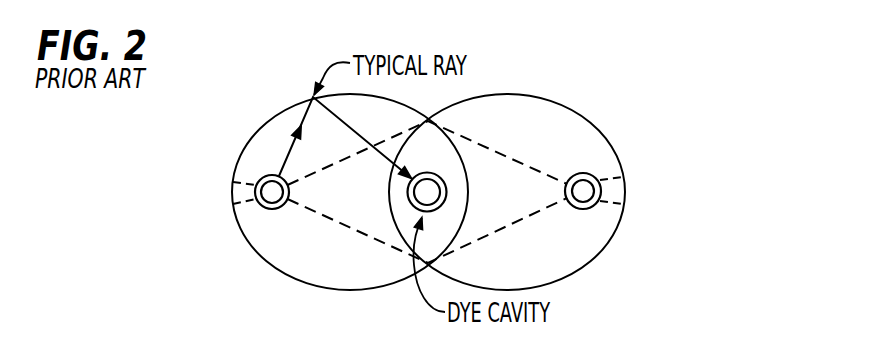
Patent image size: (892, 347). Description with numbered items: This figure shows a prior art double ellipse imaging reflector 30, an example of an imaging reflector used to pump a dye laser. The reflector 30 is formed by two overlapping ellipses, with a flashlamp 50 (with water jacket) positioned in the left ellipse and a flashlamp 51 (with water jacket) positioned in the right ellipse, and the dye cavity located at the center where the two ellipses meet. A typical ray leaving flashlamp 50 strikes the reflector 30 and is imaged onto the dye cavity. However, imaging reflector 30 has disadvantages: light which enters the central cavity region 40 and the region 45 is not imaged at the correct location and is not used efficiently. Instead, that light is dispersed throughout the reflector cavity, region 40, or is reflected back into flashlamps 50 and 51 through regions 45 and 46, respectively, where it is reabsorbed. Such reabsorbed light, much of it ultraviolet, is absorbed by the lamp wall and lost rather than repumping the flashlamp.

The double ellipse reflector 30 is at (260, 257).
The reflector cavity region 40 is at (441, 177).
The region adjacent flashlamp 50 45 is at (232, 198).
The region adjacent flashlamp 51 46 is at (618, 197).
The flashlamp 50 is at (260, 180).
The flashlamp 51 is at (586, 173).